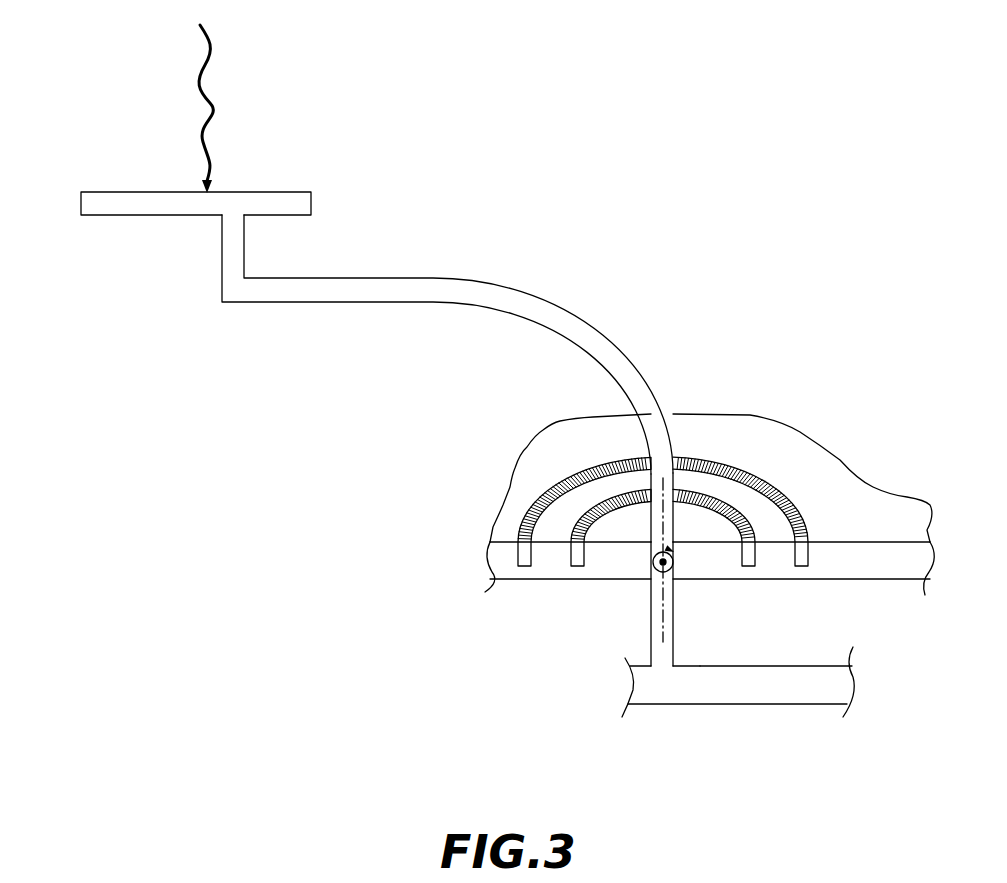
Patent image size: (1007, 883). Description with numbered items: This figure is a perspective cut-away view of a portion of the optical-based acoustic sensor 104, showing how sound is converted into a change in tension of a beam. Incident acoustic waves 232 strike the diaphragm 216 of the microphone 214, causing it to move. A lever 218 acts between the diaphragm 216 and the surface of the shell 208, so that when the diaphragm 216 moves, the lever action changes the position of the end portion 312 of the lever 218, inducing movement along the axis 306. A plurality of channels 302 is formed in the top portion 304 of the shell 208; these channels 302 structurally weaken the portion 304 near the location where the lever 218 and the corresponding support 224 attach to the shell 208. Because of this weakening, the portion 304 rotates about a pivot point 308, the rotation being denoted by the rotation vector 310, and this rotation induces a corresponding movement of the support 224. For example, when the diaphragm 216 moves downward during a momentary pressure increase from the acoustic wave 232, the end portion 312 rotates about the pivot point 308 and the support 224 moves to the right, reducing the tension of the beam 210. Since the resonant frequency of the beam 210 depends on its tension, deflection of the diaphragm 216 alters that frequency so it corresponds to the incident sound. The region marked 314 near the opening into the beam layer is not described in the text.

The optical-based acoustic sensor 104 is at (873, 412).
The shell 208 is at (843, 542).
The beam 210 is at (742, 704).
The microphone 214 is at (106, 163).
The microphone diaphragm 216 is at (152, 215).
The lever 218 is at (580, 318).
The support 224 is at (651, 655).
The acoustic wave 232 is at (217, 108).
The channels 302 is at (720, 497).
The top portion of the shell 304 is at (557, 450).
The axis 306 is at (662, 628).
The pivot point 308 is at (680, 565).
The rotation vector 310 is at (652, 565).
The end portion of the lever 312 is at (675, 455).
The outlet region 314 is at (692, 656).